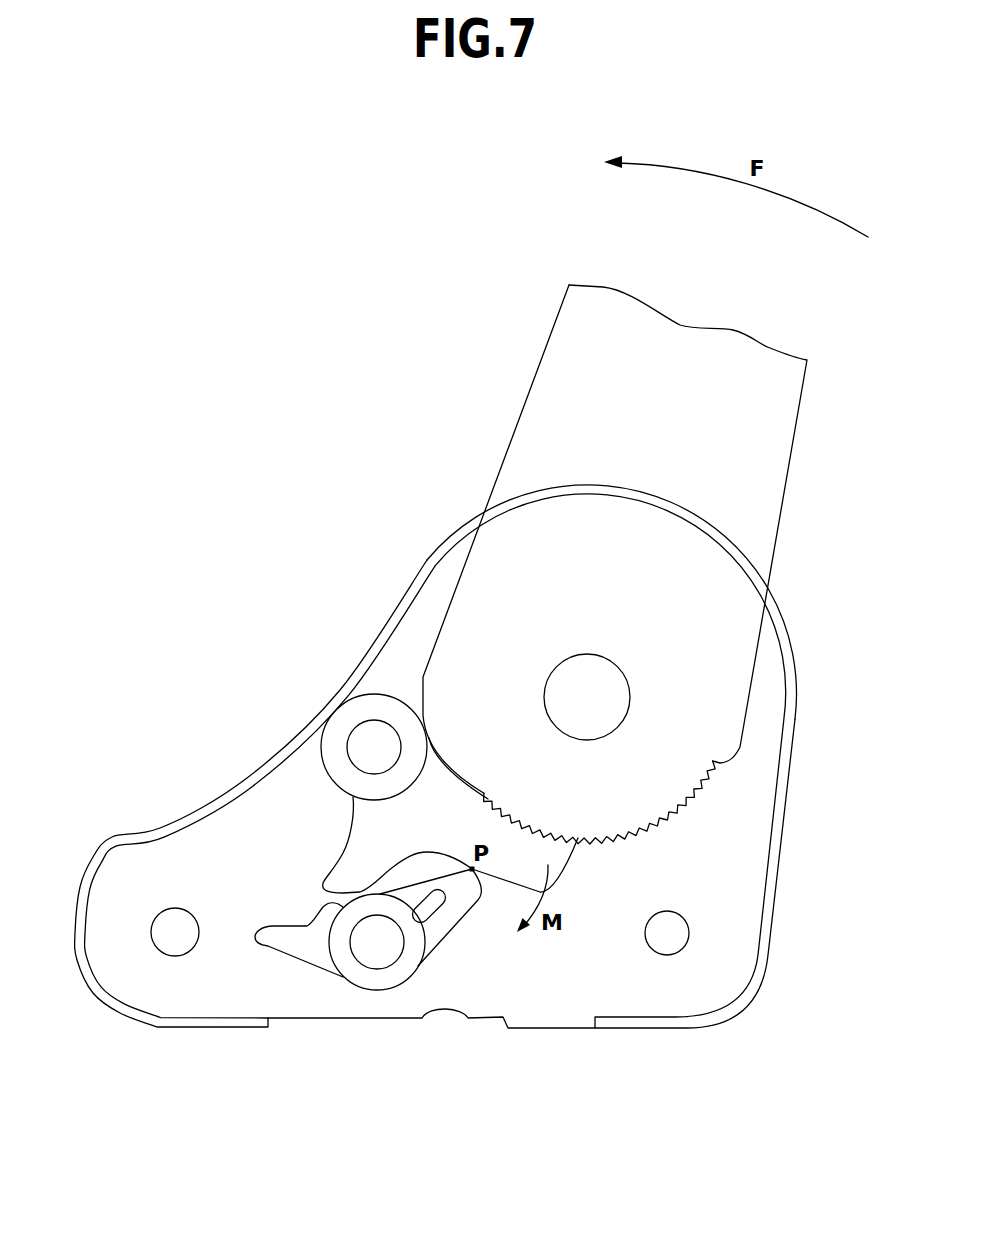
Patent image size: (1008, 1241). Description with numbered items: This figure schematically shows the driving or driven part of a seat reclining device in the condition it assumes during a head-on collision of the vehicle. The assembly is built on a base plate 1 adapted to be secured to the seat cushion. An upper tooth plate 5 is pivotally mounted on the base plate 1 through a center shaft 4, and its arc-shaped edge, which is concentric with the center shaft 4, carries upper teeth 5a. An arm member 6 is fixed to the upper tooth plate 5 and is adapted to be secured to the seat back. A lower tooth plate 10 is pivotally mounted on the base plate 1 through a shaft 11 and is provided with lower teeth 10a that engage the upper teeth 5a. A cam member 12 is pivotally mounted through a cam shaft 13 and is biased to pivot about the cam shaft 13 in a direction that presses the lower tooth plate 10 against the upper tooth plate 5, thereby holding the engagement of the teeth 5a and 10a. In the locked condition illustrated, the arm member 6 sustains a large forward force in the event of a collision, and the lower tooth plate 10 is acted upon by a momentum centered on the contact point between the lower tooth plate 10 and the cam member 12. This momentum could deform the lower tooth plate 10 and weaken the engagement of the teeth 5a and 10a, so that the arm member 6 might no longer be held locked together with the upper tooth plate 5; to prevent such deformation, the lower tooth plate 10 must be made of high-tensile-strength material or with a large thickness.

The base plate 1 is at (213, 835).
The center shaft 4 is at (603, 683).
The upper tooth plate 5 is at (604, 669).
The upper teeth 5a is at (680, 812).
The arm member 6 is at (773, 397).
The lower tooth plate 10 is at (555, 802).
The lower teeth 10a is at (575, 845).
The shaft 11 is at (375, 732).
The cam member 12 is at (440, 933).
The cam shaft 13 is at (377, 948).